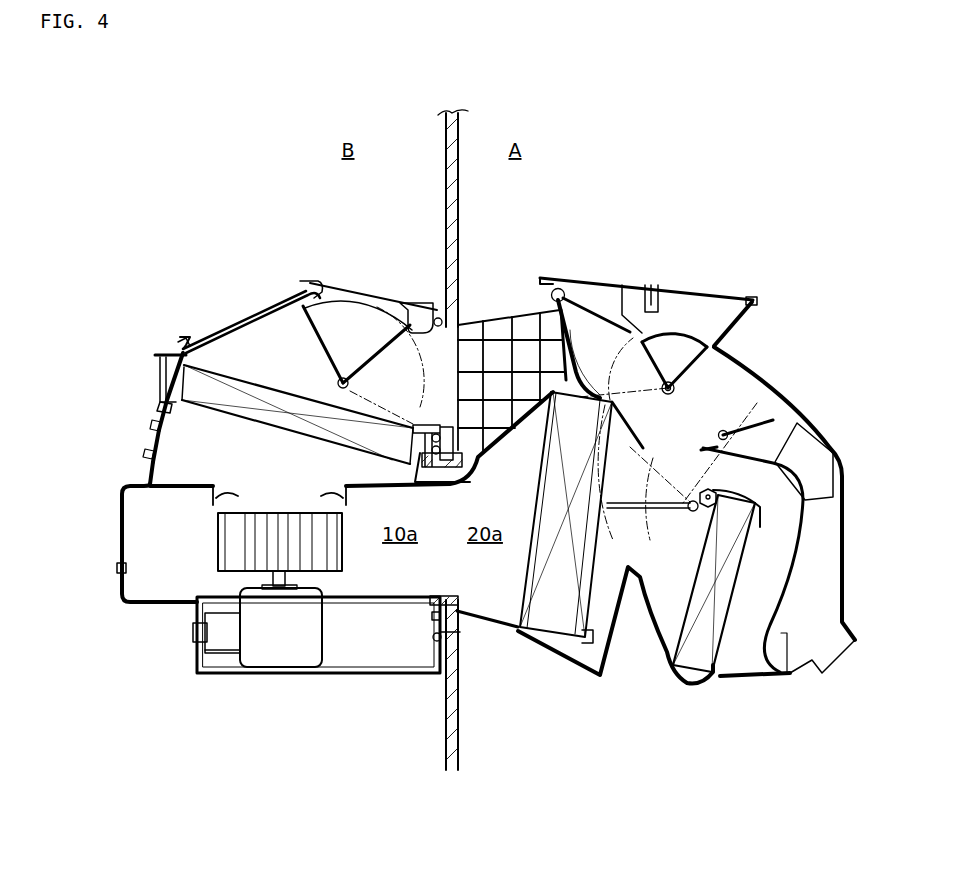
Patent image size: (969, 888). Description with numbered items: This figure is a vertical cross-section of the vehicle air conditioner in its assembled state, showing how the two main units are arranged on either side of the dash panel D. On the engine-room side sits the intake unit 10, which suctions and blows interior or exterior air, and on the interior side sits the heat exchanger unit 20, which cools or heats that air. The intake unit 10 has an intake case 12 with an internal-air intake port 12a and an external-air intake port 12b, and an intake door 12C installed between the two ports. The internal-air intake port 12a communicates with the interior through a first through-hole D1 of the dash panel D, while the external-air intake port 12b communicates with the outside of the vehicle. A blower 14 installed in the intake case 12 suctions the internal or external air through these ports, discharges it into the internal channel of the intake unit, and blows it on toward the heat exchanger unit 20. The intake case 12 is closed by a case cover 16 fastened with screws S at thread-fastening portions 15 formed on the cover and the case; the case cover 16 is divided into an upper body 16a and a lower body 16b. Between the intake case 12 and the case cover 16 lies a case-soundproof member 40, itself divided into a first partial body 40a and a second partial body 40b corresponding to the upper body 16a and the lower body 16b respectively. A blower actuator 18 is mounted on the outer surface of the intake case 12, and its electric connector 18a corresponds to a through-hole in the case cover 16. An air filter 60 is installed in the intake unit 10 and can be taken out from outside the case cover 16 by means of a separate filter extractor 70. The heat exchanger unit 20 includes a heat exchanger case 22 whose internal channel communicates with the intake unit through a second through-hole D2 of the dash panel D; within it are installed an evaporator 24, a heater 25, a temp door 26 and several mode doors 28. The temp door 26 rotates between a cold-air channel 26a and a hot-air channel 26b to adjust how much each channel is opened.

The intake unit 10 is at (378, 616).
The intake case 12 is at (288, 300).
The internal-air intake port 12a is at (440, 375).
The external-air intake port 12b is at (377, 305).
The intake door 12C is at (338, 308).
The blower 14 is at (228, 560).
The thread-fastening portion 15 is at (184, 347).
The case cover 16 is at (238, 311).
The upper body 16a is at (150, 450).
The lower body 16b is at (146, 463).
The blower actuator 18 is at (229, 640).
The electric connector 18a is at (197, 642).
The heat exchanger unit 20 is at (678, 698).
The heat exchanger case 22 is at (763, 685).
The evaporator 24 is at (557, 628).
The heater 25 is at (692, 668).
The temp door 26 is at (678, 470).
The cold-air channel 26a is at (773, 422).
The hot-air channel 26b is at (664, 550).
The mode door 28 is at (582, 293).
The case-soundproof member 40 is at (268, 298).
The first partial body 40a is at (158, 408).
The second partial body 40b is at (124, 517).
The air filter 60 is at (300, 428).
The filter extractor 70 is at (152, 379).
The screw S is at (183, 350).
The dash panel D is at (458, 132).
The first through-hole D1 is at (462, 335).
The second through-hole D2 is at (414, 614).